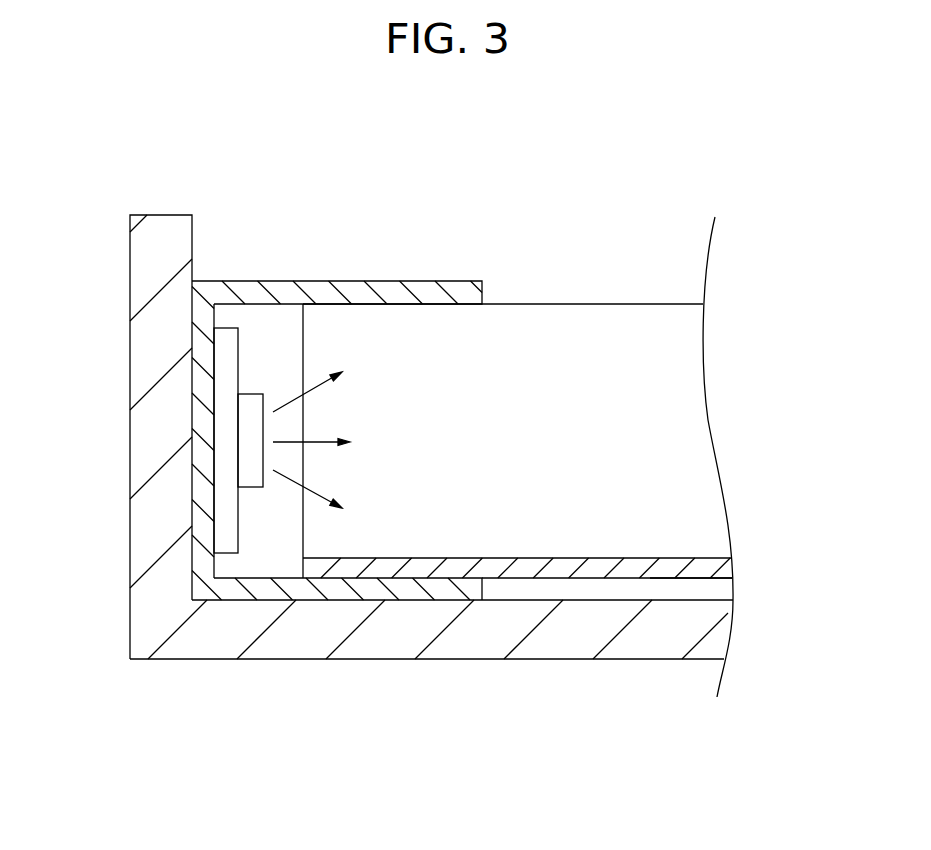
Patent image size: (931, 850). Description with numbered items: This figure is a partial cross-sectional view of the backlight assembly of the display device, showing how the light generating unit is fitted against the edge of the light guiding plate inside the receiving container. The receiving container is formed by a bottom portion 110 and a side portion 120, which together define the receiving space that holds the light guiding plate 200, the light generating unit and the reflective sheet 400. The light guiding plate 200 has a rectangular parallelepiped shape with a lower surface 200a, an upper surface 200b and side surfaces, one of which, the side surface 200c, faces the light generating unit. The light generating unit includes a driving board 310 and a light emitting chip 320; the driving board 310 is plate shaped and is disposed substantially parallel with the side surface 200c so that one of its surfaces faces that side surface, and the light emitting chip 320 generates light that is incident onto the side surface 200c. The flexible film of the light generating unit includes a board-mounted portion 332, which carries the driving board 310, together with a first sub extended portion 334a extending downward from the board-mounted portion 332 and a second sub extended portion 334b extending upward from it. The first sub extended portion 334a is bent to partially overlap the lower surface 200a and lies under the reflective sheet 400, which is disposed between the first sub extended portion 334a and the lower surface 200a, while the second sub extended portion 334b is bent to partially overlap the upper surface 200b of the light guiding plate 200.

The bottom portion 110 is at (365, 635).
The side portion 120 is at (153, 562).
The light guiding plate 200 is at (518, 452).
The lower surface 200a is at (487, 558).
The upper surface 200b is at (515, 304).
The side surface 200c is at (303, 343).
The driving board 310 is at (227, 368).
The light emitting chip 320 is at (248, 442).
The board-mounted portion 332 is at (200, 510).
The first sub extended portion 334a is at (242, 595).
The second sub extended portion 334b is at (283, 290).
The reflective sheet 400 is at (718, 570).